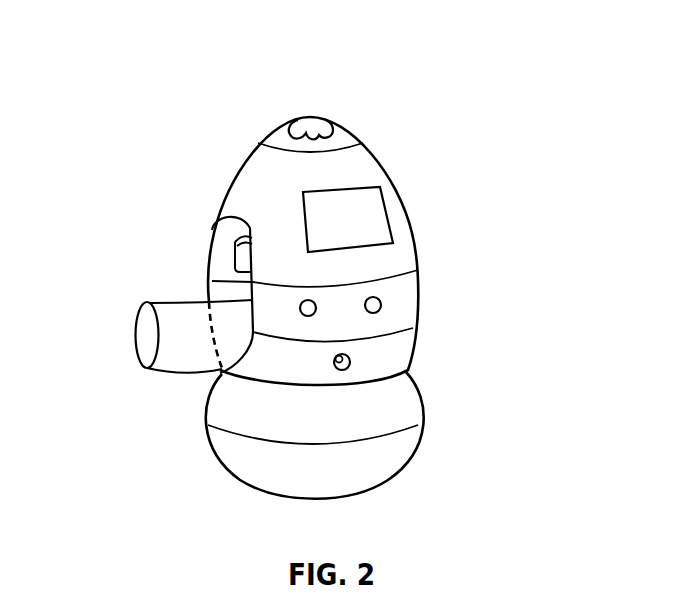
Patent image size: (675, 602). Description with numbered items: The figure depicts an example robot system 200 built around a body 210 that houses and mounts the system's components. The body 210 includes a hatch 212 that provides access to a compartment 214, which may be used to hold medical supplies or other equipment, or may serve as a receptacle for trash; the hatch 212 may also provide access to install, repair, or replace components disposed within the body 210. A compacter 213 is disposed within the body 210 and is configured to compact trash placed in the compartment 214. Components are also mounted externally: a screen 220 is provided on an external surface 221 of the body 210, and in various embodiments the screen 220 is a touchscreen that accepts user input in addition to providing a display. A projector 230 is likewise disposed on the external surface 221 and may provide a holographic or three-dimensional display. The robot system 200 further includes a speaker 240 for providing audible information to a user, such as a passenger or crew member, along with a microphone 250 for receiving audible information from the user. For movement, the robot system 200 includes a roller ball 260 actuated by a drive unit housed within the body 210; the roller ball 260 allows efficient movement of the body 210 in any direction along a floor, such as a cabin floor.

The robot system 200 is at (416, 49).
The body 210 is at (388, 162).
The hatch 212 is at (168, 368).
The compacter 213 is at (242, 257).
The compartment 214 is at (227, 291).
The screen 220 is at (380, 197).
The external surface 221 is at (403, 260).
The projector 230 is at (353, 363).
The speaker 240 is at (316, 308).
The microphone 250 is at (383, 304).
The roller ball 260 is at (336, 465).